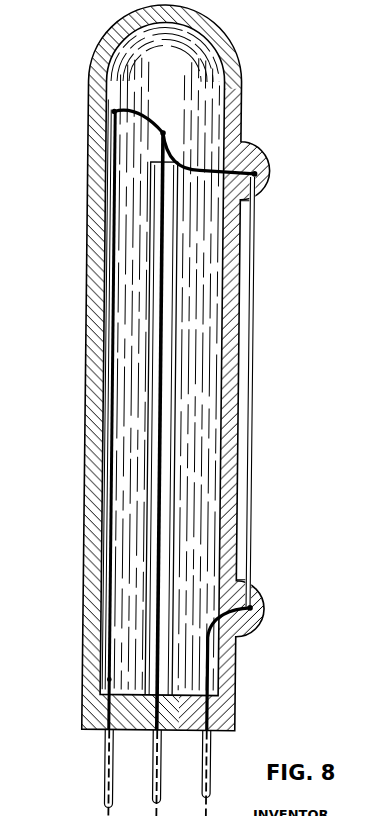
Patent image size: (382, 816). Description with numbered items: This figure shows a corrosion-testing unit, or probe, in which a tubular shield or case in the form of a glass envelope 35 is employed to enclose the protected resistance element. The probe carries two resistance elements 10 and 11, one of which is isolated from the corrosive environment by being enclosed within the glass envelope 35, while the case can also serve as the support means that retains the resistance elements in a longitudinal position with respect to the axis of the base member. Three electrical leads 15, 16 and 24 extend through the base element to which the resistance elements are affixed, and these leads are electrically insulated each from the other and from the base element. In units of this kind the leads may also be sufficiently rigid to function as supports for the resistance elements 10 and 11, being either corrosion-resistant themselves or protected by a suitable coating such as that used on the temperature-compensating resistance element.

The glass envelope 35 is at (240, 98).
The resistance element 10 is at (256, 278).
The resistance element 11 is at (118, 158).
The electrical lead 15 is at (108, 783).
The electrical lead 24 is at (158, 796).
The electrical lead 16 is at (208, 785).